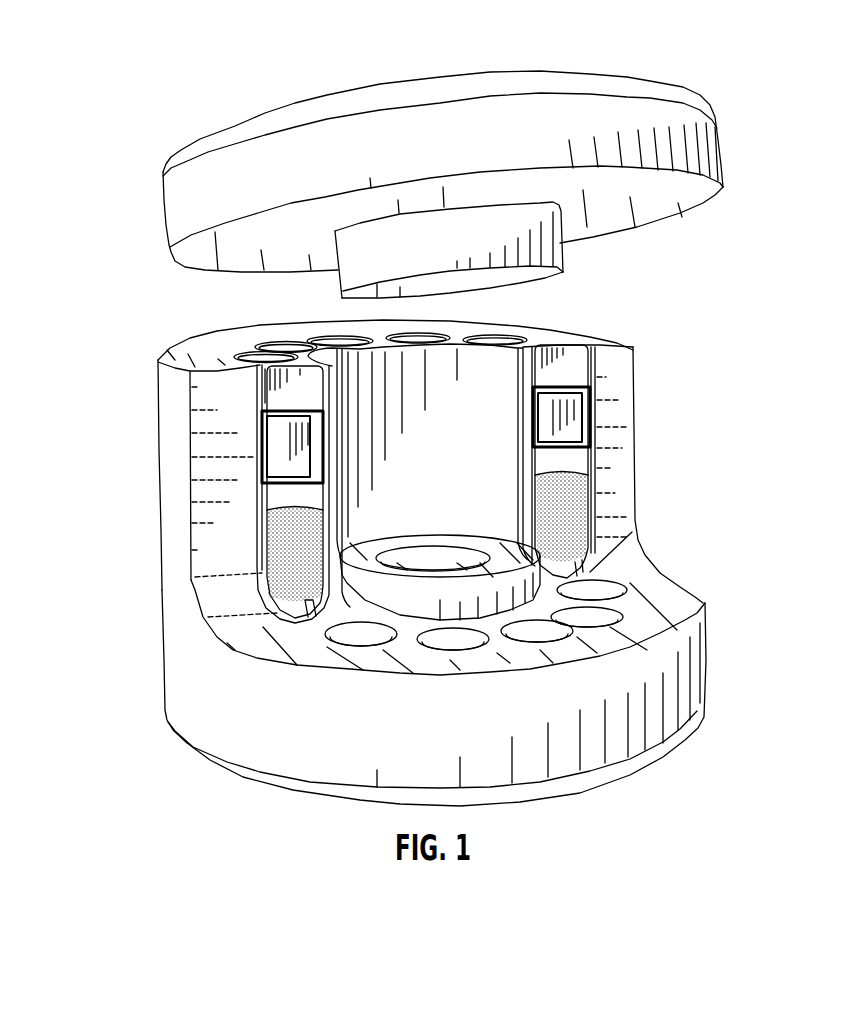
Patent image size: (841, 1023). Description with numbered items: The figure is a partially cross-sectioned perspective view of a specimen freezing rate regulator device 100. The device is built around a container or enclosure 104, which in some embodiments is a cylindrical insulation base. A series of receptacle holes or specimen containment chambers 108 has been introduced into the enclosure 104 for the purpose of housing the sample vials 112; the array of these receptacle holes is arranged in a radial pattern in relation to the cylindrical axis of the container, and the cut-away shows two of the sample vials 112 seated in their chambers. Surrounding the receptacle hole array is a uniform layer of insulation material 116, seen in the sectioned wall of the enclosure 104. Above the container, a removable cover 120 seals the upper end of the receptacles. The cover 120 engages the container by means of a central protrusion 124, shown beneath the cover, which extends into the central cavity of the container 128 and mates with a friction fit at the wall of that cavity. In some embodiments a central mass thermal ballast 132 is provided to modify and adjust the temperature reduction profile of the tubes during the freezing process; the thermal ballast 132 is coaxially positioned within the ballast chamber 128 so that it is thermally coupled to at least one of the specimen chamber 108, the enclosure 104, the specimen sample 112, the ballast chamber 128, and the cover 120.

The specimen freezing rate regulator device 100 is at (118, 79).
The container or enclosure 104 is at (217, 710).
The receptacle holes or specimen containment chambers 108 is at (563, 360).
The sample vials 112 is at (582, 510).
The insulation material 116 is at (217, 508).
The removable cover 120 is at (203, 189).
The central protrusion 124 is at (377, 257).
The central cavity / ballast chamber 128 is at (490, 385).
The central mass thermal ballast 132 is at (628, 533).